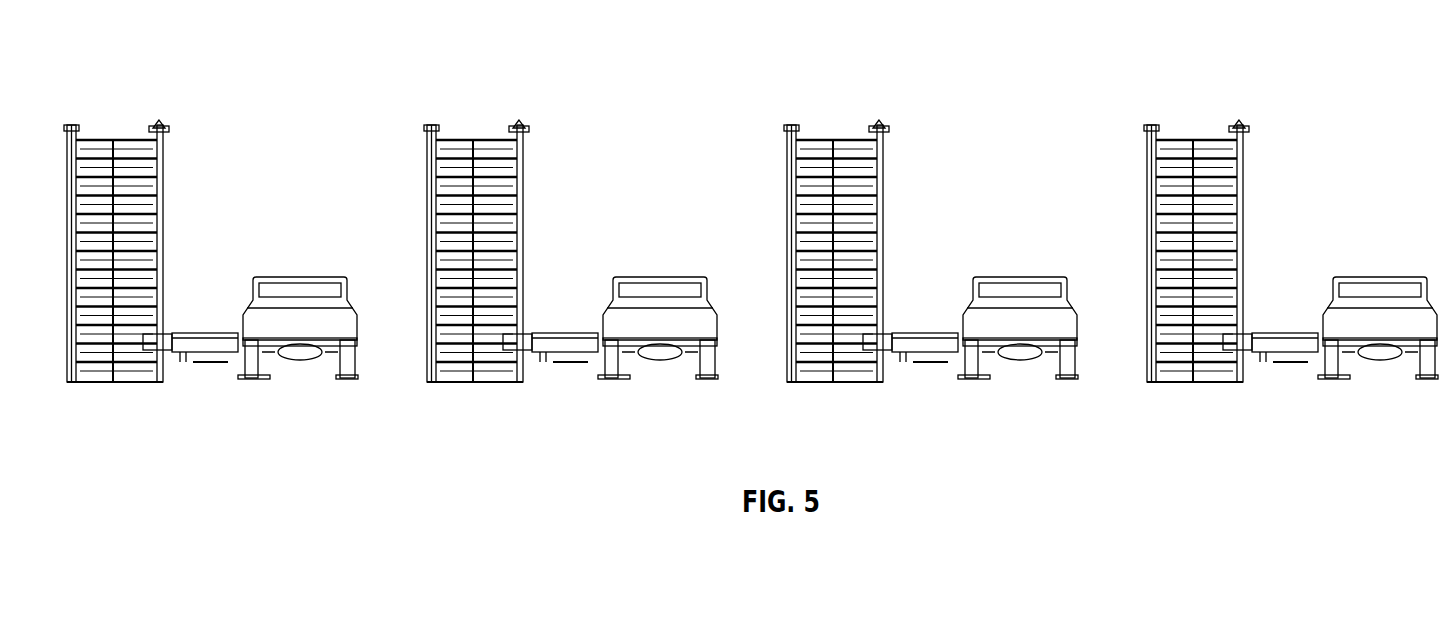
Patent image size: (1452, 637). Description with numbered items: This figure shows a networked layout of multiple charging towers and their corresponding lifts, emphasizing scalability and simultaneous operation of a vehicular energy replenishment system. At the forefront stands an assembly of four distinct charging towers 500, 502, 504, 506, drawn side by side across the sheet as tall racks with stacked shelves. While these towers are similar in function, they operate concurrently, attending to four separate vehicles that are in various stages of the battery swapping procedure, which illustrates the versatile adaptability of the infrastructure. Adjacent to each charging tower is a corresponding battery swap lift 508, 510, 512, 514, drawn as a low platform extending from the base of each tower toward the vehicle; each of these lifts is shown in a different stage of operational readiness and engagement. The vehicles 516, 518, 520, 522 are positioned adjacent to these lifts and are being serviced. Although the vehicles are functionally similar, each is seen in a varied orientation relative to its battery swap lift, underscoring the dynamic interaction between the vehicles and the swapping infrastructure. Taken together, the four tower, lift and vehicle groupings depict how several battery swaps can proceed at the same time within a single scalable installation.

The charging tower 500 is at (80, 140).
The charging tower 502 is at (510, 212).
The charging tower 504 is at (874, 205).
The charging tower 506 is at (1245, 209).
The battery swap lift 508 is at (188, 342).
The battery swap lift 510 is at (586, 400).
The battery swap lift 512 is at (949, 400).
The battery swap lift 514 is at (1295, 402).
The vehicle 516 is at (292, 290).
The vehicle 518 is at (657, 276).
The vehicle 520 is at (1016, 272).
The vehicle 522 is at (1371, 275).